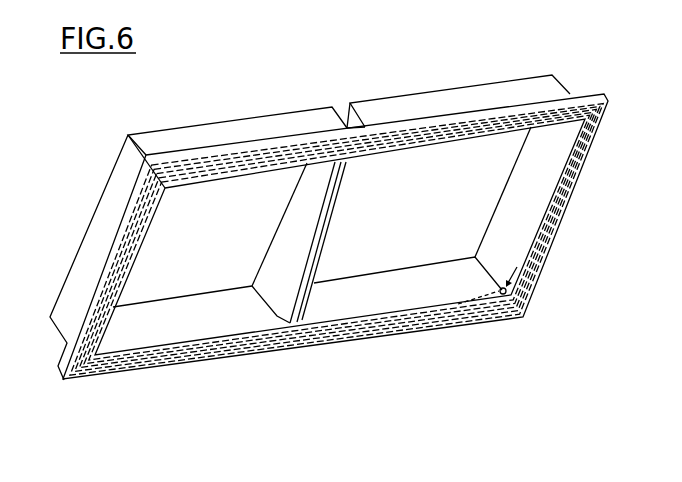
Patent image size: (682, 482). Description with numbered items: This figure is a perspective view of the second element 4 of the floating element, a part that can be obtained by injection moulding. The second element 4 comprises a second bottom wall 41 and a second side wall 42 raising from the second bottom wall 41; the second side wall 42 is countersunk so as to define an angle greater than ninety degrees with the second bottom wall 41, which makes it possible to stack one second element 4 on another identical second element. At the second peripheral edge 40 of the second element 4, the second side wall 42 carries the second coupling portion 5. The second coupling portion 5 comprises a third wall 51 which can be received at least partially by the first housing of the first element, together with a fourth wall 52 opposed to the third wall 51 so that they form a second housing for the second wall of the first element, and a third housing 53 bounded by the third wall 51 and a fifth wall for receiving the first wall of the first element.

The second element 4 is at (457, 405).
The second coupling portion 5 is at (341, 200).
The second peripheral edge 40 is at (427, 336).
The second bottom wall 41 is at (257, 153).
The second side wall 42 is at (480, 97).
The third wall 51 is at (602, 114).
The fourth wall 52 is at (594, 138).
The third housing 53 is at (118, 248).